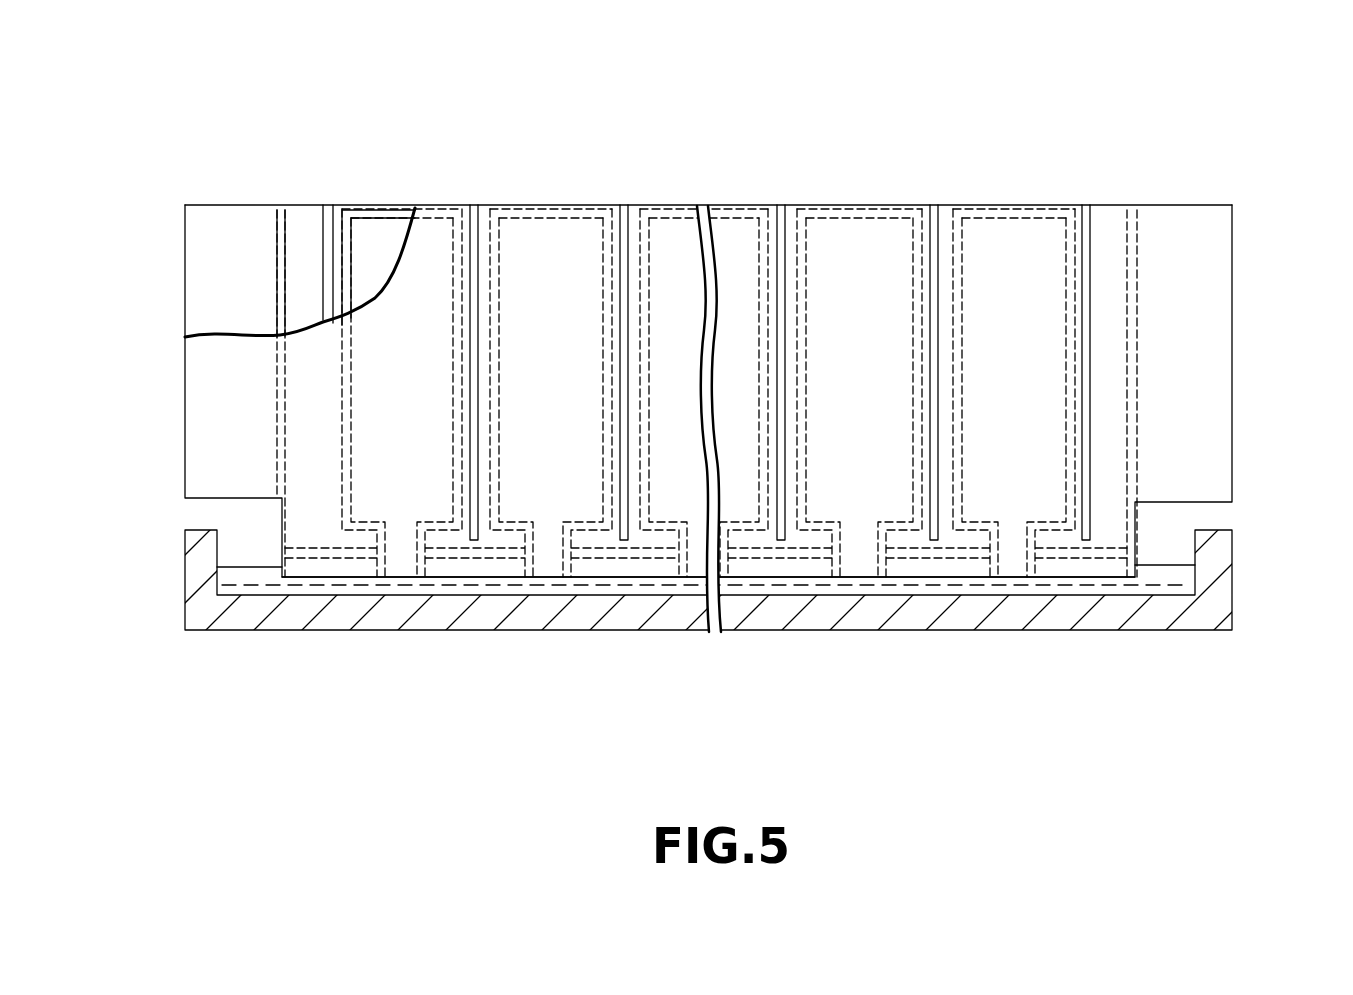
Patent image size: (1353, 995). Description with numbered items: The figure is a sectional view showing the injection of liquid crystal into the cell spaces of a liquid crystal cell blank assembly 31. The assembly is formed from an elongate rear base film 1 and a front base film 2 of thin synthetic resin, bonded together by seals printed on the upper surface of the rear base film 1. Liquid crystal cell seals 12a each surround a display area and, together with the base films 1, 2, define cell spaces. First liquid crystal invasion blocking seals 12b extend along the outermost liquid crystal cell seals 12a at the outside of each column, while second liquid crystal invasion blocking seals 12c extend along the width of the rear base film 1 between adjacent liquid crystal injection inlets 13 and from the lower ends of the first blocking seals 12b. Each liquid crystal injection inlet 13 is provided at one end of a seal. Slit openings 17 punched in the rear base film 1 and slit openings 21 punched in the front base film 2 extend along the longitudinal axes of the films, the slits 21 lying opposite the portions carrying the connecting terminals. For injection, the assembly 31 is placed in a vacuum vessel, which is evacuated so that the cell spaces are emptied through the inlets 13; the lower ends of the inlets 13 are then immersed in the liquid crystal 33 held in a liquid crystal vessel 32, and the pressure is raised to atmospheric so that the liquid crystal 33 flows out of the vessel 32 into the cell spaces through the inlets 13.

The rear base film 1 is at (233, 218).
The front base film 2 is at (555, 232).
The liquid crystal cell seal 12a is at (388, 220).
The first liquid crystal invasion blocking seal 12b is at (282, 206).
The second liquid crystal invasion blocking seal 12c is at (323, 553).
The liquid crystal injection inlet 13 is at (407, 563).
The slit opening 17 is at (322, 245).
The slit opening 21 is at (478, 374).
The liquid crystal cell blank assembly 31 is at (895, 206).
The liquid crystal vessel 32 is at (247, 615).
The liquid crystal 33 is at (364, 588).